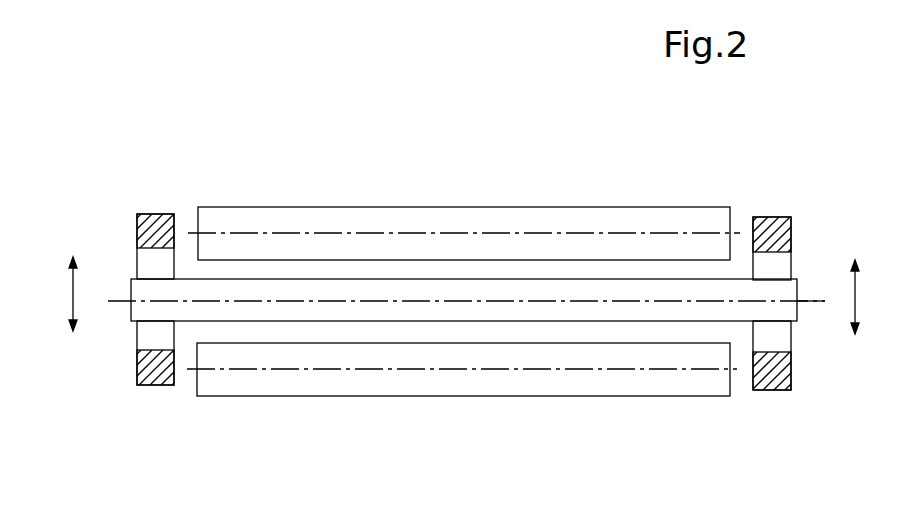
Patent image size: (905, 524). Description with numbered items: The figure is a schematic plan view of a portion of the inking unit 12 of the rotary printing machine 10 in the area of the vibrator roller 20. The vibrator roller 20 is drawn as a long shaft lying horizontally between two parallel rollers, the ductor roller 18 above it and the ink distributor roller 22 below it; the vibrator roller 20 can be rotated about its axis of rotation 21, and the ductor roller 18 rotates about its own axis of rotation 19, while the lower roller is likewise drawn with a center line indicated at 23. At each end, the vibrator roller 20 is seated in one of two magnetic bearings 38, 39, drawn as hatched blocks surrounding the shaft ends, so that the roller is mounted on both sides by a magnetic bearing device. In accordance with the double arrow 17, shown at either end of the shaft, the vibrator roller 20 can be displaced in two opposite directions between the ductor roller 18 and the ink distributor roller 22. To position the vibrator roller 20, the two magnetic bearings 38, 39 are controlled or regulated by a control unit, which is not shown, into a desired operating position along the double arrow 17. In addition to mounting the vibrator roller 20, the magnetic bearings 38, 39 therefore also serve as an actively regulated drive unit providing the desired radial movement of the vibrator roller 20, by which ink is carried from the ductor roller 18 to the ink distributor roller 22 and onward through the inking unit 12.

The rotary printing machine 10 is at (106, 202).
The inking unit 12 is at (280, 164).
The double arrow 17 is at (72, 293).
The ductor roller 18 is at (575, 215).
The axis of rotation 19 is at (667, 232).
The vibrator roller 20 is at (453, 290).
The axis of rotation 21 is at (812, 303).
The ink distributor roller 22 is at (320, 380).
The roller axis 23 is at (260, 370).
The magnetic bearing 38 is at (155, 225).
The magnetic bearing 39 is at (768, 227).